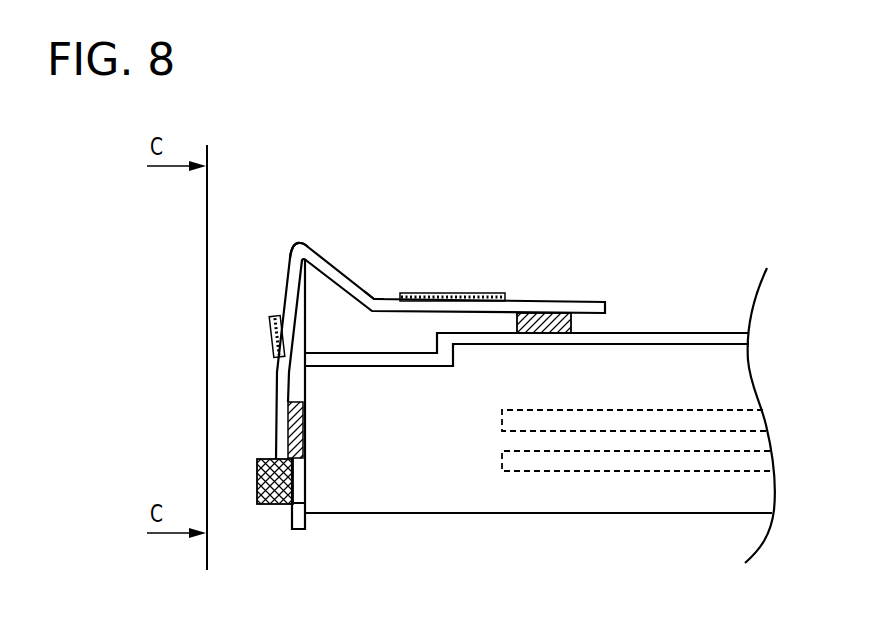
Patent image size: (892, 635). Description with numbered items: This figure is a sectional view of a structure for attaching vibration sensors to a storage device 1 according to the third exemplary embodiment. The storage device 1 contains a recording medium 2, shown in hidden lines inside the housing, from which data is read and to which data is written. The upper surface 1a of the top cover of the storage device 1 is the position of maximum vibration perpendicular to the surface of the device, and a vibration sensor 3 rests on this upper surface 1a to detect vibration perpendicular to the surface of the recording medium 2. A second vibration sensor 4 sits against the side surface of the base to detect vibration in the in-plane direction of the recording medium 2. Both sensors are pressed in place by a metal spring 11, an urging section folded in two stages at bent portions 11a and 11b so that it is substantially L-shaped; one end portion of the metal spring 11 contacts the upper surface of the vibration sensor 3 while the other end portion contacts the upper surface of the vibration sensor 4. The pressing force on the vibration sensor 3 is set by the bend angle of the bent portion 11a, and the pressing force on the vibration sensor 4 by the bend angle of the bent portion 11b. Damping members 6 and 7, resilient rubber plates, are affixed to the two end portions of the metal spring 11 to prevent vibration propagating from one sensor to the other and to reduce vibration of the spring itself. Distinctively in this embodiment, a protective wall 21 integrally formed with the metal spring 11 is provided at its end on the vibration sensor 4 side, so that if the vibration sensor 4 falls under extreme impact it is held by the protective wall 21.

The storage device 1 is at (672, 325).
The upper surface of the top cover 1a is at (637, 333).
The recording medium 2 is at (752, 420).
The vibration sensor 3 is at (548, 313).
The vibration sensor 4 is at (290, 433).
The damping member 6 is at (458, 293).
The damping member 7 is at (273, 336).
The metal spring 11 is at (590, 300).
The bent portion 11a is at (375, 298).
The bent portion 11b is at (298, 248).
The protective wall 21 is at (268, 505).